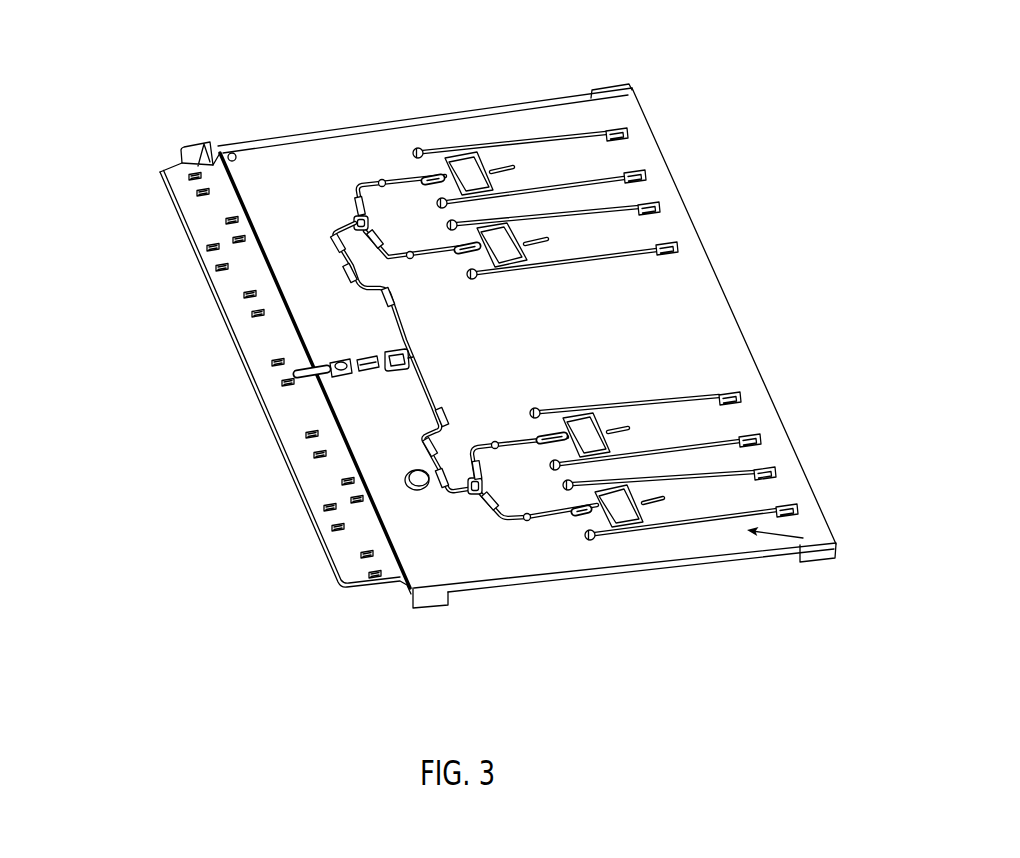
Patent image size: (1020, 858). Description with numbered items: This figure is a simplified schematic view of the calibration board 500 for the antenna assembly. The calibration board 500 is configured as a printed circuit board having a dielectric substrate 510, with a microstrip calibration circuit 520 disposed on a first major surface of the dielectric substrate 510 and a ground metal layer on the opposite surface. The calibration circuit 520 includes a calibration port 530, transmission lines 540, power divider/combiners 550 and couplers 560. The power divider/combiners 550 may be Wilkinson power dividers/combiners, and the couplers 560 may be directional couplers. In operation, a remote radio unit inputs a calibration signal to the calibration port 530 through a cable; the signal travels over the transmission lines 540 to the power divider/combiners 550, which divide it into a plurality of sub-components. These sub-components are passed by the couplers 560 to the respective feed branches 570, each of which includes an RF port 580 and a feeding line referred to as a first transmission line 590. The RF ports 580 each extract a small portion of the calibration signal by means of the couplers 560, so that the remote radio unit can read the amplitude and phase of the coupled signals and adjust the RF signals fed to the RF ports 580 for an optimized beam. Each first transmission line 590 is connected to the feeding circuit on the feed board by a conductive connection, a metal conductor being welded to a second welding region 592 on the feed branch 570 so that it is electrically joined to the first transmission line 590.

The calibration board 500 is at (112, 98).
The dielectric substrate 510 is at (693, 347).
The microstrip calibration circuit 520 is at (377, 421).
The calibration port 530 is at (300, 365).
The transmission lines 540 is at (400, 309).
The power divider/combiners 550 is at (338, 205).
The couplers 560 is at (618, 514).
The feed branches 570 is at (800, 548).
The RF ports 580 is at (417, 148).
The first transmission line 590 is at (549, 132).
The second welding region 592 is at (618, 125).